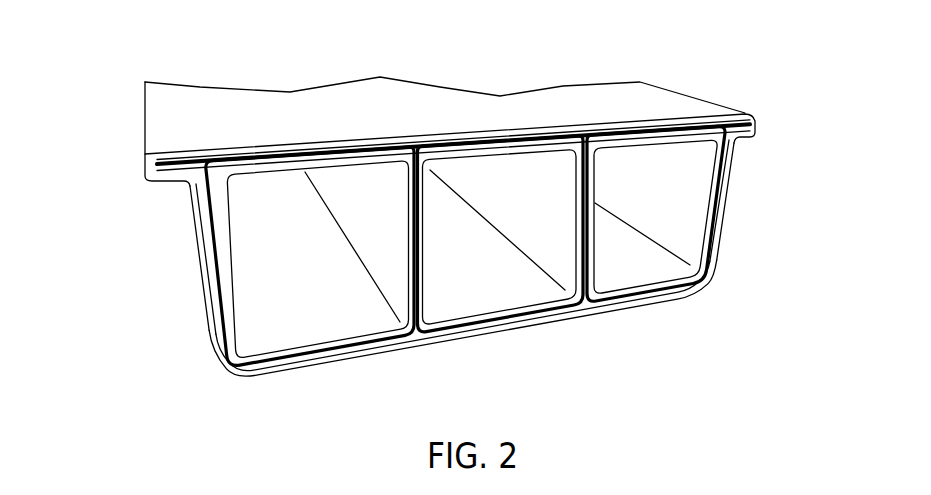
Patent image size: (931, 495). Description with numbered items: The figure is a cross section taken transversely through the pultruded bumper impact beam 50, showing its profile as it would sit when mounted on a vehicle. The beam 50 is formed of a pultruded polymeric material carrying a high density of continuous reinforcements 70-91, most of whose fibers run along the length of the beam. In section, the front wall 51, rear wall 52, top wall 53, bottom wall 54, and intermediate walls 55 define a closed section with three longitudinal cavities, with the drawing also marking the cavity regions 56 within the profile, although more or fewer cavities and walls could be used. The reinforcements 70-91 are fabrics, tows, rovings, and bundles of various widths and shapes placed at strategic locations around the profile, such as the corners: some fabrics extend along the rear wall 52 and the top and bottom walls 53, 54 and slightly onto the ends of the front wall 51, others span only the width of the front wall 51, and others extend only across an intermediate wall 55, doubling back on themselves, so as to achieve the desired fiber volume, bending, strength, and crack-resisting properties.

The bumper impact beam 50 is at (140, 243).
The front wall 51 is at (453, 107).
The rear wall 52 is at (522, 328).
The top wall 53 is at (215, 281).
The bottom wall 54 is at (727, 194).
The intermediate wall 55 is at (413, 224).
The opening 56 is at (314, 322).
The continuous reinforcements 70-91 is at (555, 136).